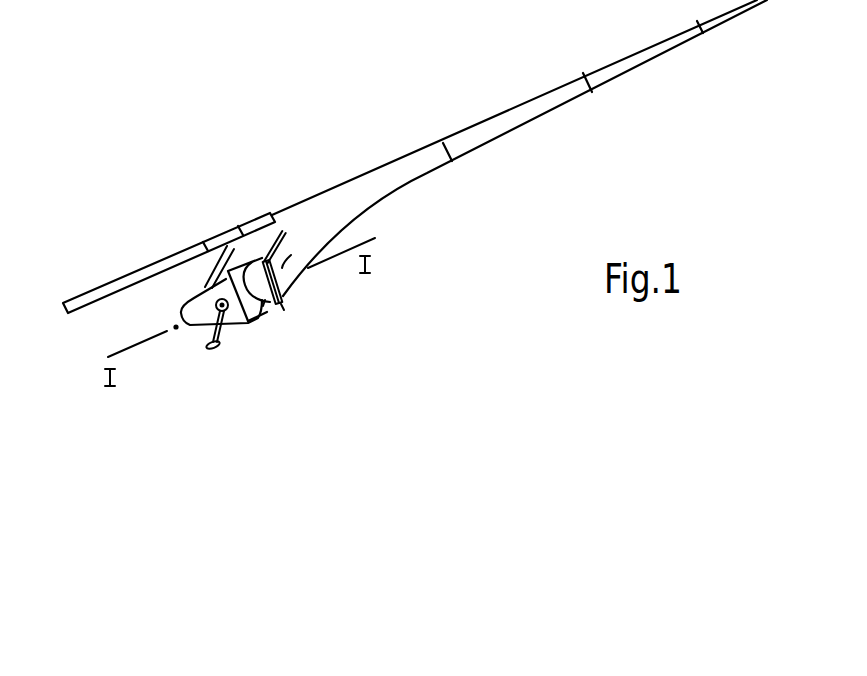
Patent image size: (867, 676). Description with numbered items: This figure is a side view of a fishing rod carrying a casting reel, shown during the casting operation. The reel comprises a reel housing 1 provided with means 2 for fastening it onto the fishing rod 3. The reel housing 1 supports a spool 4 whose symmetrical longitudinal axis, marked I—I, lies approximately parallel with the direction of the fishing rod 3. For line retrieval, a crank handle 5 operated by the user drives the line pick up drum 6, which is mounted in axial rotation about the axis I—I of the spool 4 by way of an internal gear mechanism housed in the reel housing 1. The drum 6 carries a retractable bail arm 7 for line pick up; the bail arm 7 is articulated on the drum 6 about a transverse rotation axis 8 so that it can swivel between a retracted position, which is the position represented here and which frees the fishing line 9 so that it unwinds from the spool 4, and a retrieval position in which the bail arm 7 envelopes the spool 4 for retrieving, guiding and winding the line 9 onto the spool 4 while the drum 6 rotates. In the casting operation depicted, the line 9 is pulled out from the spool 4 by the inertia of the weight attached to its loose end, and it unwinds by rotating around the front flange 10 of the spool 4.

The reel housing 1 is at (192, 327).
The means for fastening 2 is at (208, 278).
The fishing rod 3 is at (393, 158).
The spool 4 is at (291, 255).
The crank handle 5 is at (223, 338).
The line pick up drum 6 is at (267, 312).
The retractable bail arm 7 is at (284, 230).
The transverse rotation axis 8 is at (269, 316).
The fishing line 9 is at (370, 208).
The front flange 10 is at (287, 268).